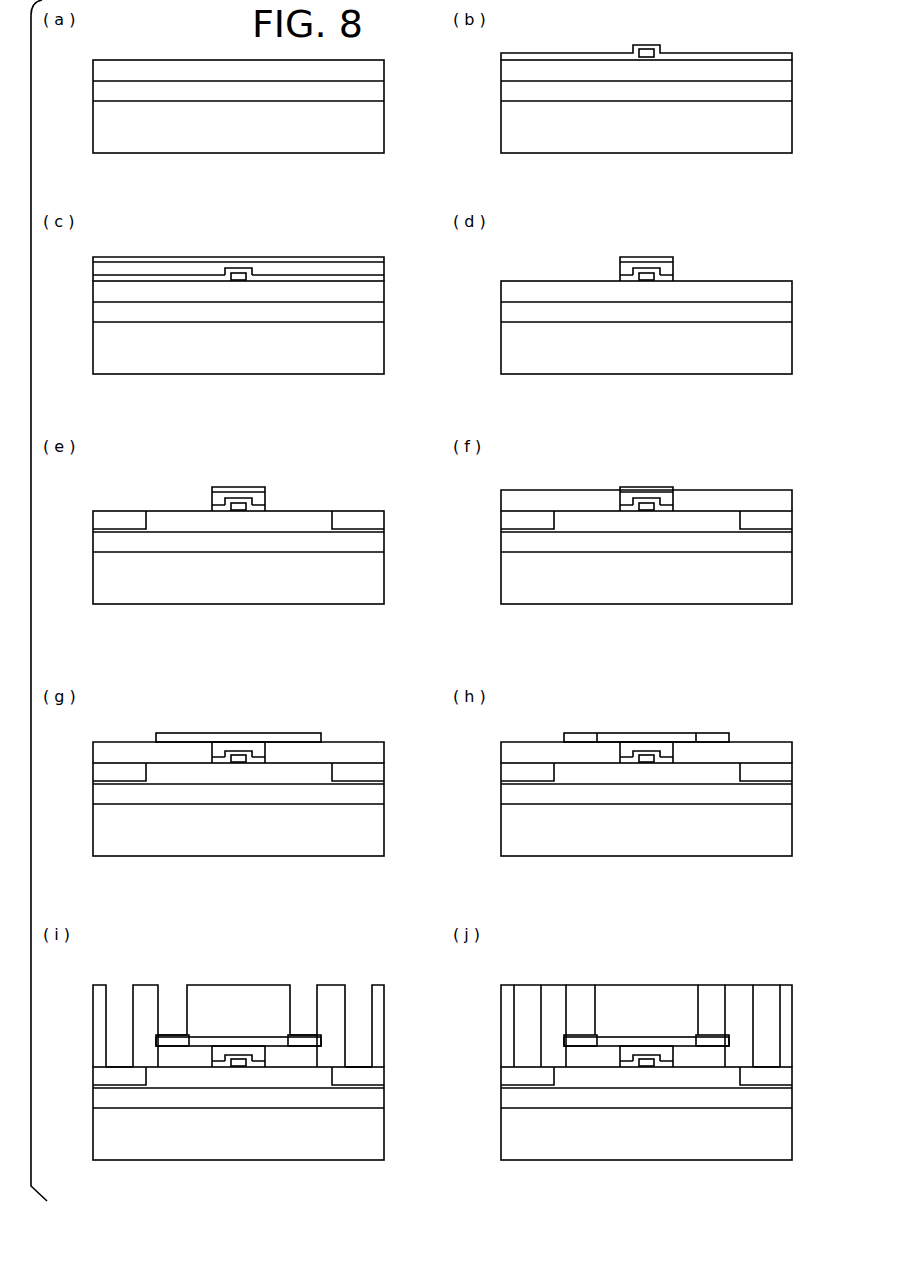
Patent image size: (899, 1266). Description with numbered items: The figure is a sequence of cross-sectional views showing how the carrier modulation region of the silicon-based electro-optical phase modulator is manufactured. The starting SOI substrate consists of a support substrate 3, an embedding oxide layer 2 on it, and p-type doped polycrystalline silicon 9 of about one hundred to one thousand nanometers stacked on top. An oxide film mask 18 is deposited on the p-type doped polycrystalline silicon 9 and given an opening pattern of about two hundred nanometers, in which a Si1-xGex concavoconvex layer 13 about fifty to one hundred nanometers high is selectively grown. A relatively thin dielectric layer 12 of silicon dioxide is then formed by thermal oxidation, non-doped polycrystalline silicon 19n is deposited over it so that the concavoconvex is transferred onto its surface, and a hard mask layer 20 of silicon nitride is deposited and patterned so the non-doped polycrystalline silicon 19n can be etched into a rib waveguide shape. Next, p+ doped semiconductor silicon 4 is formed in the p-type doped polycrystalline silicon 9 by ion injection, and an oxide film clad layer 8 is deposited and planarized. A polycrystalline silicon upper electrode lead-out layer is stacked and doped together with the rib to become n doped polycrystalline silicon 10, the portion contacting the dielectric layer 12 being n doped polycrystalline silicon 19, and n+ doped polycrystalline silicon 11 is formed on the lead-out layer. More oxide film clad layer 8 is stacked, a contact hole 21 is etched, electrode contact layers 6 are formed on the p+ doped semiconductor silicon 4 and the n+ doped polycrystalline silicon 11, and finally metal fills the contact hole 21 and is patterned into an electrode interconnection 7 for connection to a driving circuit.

The embedding oxide layer 2 is at (370, 88).
The support substrate 3 is at (278, 137).
The p+ doped semiconductor silicon 4 is at (370, 518).
The electrode contact layer 6 is at (308, 1032).
The electrode interconnection 7 is at (710, 992).
The oxide film clad layer 8 is at (535, 495).
The p-type doped polycrystalline silicon 9 is at (315, 72).
The n doped polycrystalline silicon 10 is at (197, 739).
The n+ doped polycrystalline silicon 11 is at (583, 737).
The dielectric layer 12 is at (227, 282).
The Si1-xGex concavoconvex layer 13 is at (646, 61).
The oxide film mask 18 is at (695, 53).
The n doped polycrystalline silicon 19 is at (665, 750).
The non-doped polycrystalline silicon 19n is at (105, 270).
The hard mask layer 20 is at (245, 258).
The contact hole 21 is at (360, 992).